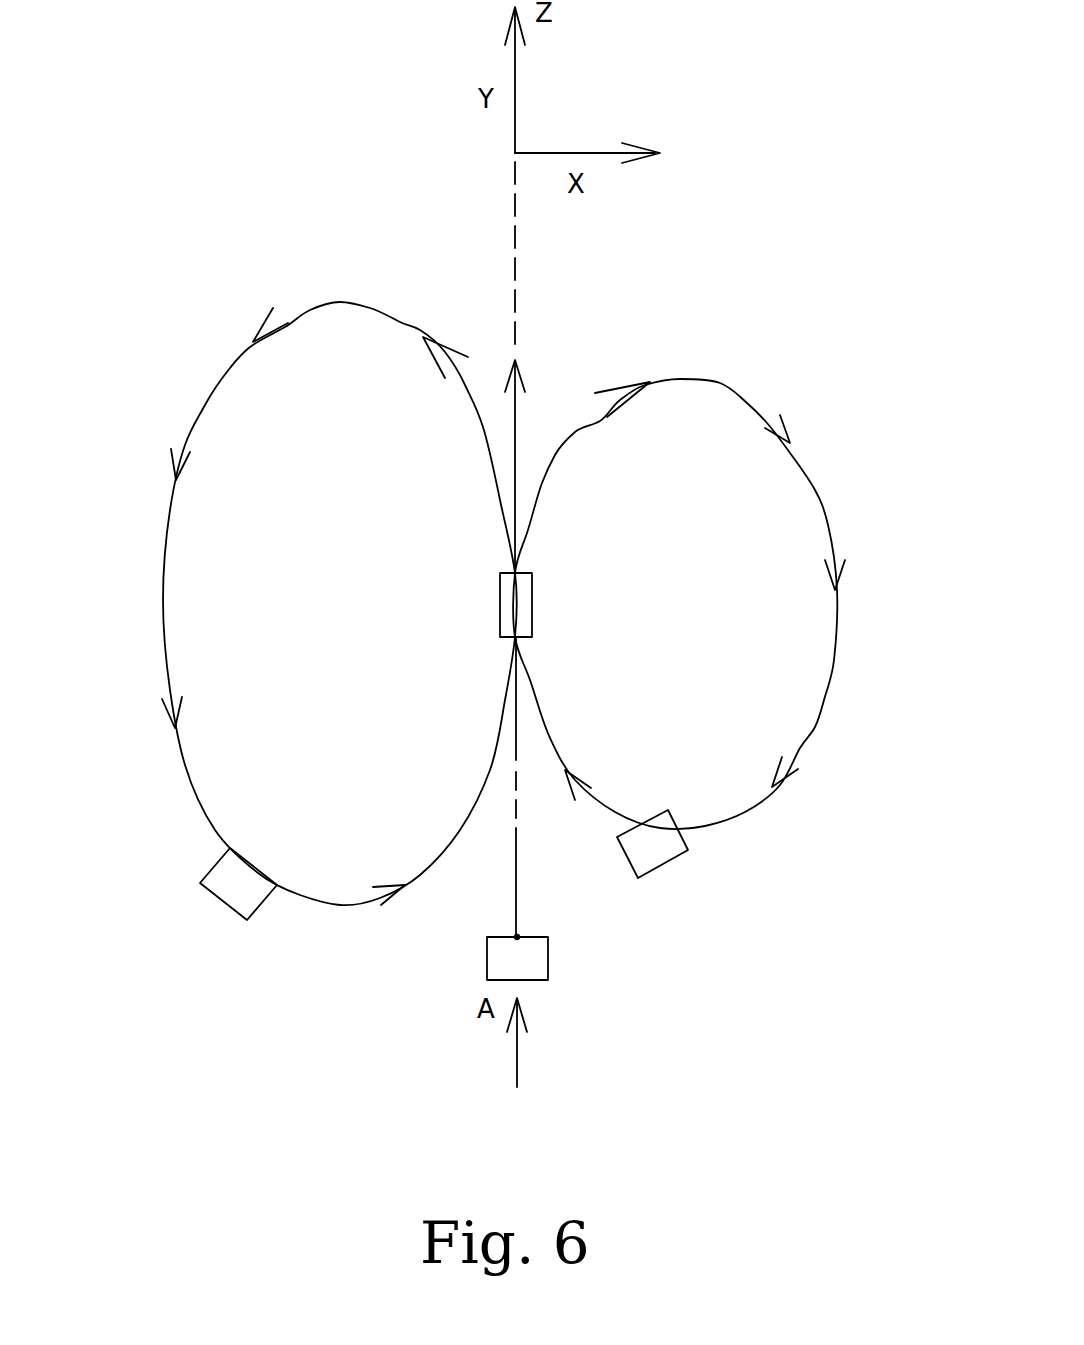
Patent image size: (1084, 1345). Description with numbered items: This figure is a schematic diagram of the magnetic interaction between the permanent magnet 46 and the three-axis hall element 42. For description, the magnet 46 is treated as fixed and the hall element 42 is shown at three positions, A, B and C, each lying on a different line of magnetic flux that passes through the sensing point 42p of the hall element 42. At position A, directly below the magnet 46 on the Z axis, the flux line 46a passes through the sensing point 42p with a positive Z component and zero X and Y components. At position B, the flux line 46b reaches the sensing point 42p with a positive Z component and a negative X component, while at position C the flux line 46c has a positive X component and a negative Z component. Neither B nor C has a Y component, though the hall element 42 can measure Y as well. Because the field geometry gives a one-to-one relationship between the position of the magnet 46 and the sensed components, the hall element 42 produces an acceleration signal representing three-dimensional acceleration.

The three-axis hall element 42 is at (530, 967).
The sensing point 42p is at (517, 937).
The permanent magnet 46 is at (532, 600).
The magnetic field line of flux 46a is at (518, 1055).
The flux line 46b is at (815, 727).
The flux line 46c is at (190, 755).